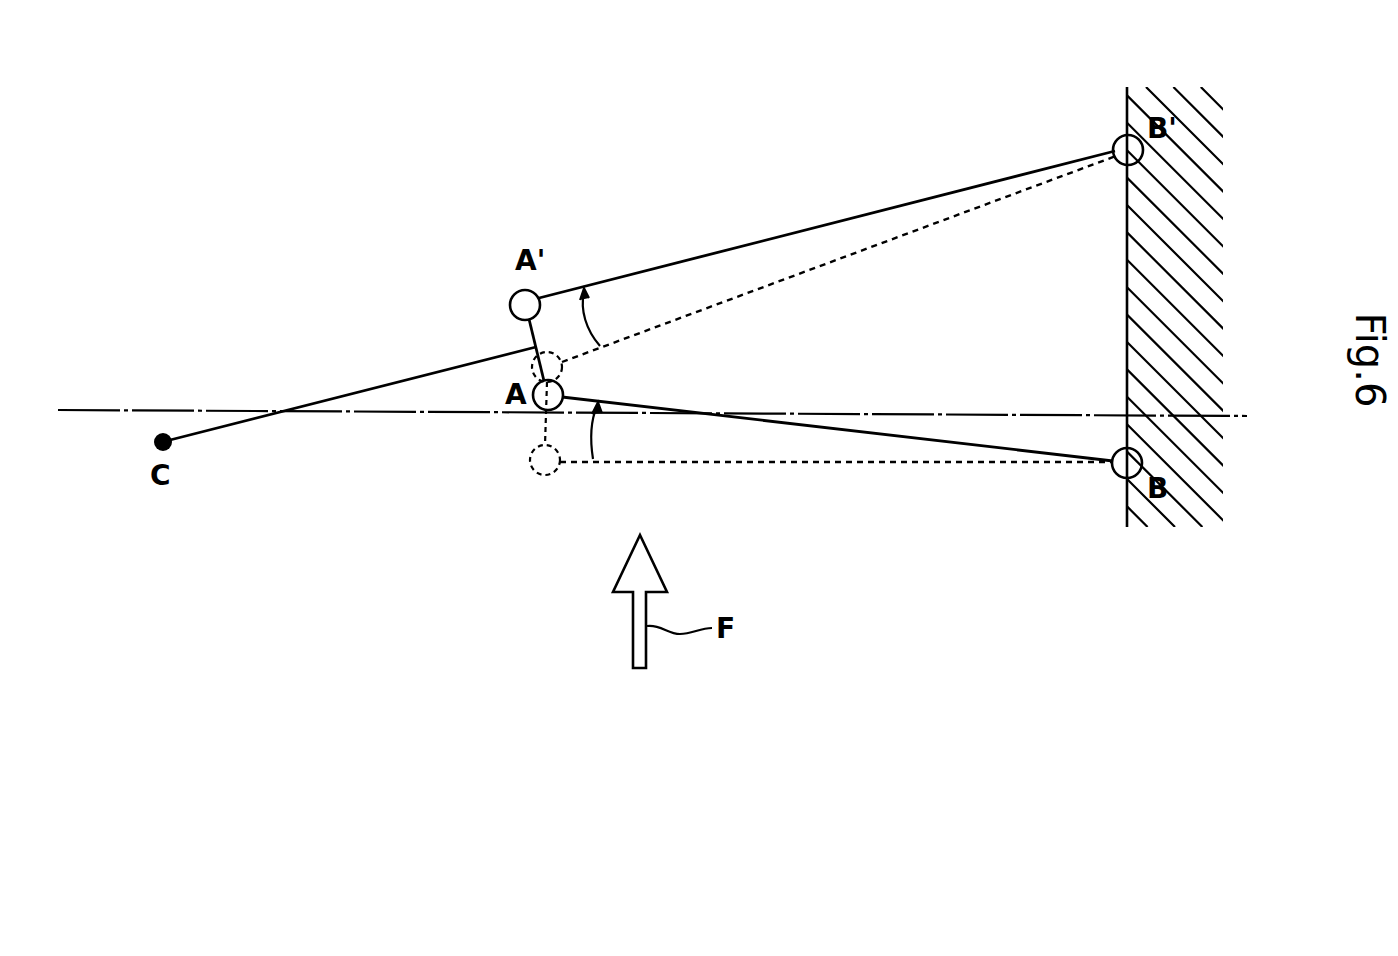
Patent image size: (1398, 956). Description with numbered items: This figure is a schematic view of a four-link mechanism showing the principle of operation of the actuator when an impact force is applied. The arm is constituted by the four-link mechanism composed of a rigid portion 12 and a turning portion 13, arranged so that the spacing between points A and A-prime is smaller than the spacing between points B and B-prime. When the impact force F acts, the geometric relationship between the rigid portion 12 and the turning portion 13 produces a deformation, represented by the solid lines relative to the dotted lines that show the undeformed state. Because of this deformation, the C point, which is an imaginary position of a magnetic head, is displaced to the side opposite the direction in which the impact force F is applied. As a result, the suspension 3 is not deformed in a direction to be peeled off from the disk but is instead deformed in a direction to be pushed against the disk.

The suspension 3 is at (345, 396).
The rigid portion 12 is at (755, 417).
The turning portion 13 is at (510, 308).